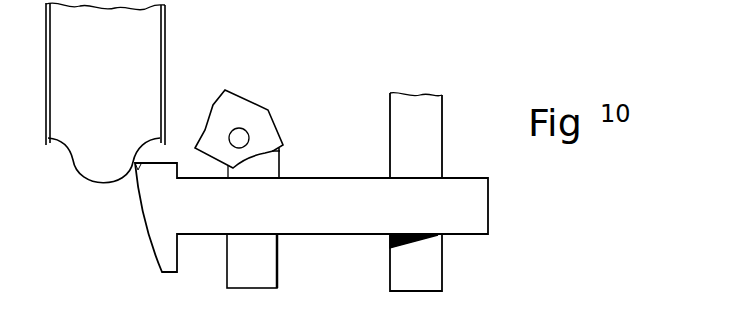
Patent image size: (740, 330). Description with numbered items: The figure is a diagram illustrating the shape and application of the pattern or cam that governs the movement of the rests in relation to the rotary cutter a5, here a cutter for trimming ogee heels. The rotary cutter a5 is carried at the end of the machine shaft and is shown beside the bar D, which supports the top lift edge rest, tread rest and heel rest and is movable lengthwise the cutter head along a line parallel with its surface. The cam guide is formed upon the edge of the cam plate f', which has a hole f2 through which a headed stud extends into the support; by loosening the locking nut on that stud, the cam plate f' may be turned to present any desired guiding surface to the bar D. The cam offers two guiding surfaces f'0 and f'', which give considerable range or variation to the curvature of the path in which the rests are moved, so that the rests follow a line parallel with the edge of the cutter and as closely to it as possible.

The rotary cutter a5 is at (105, 93).
The bar D is at (338, 211).
The cam plate f' is at (239, 126).
The hole f2 is at (241, 137).
The cam surface f'' is at (215, 190).
The cam surface f'0 is at (274, 181).